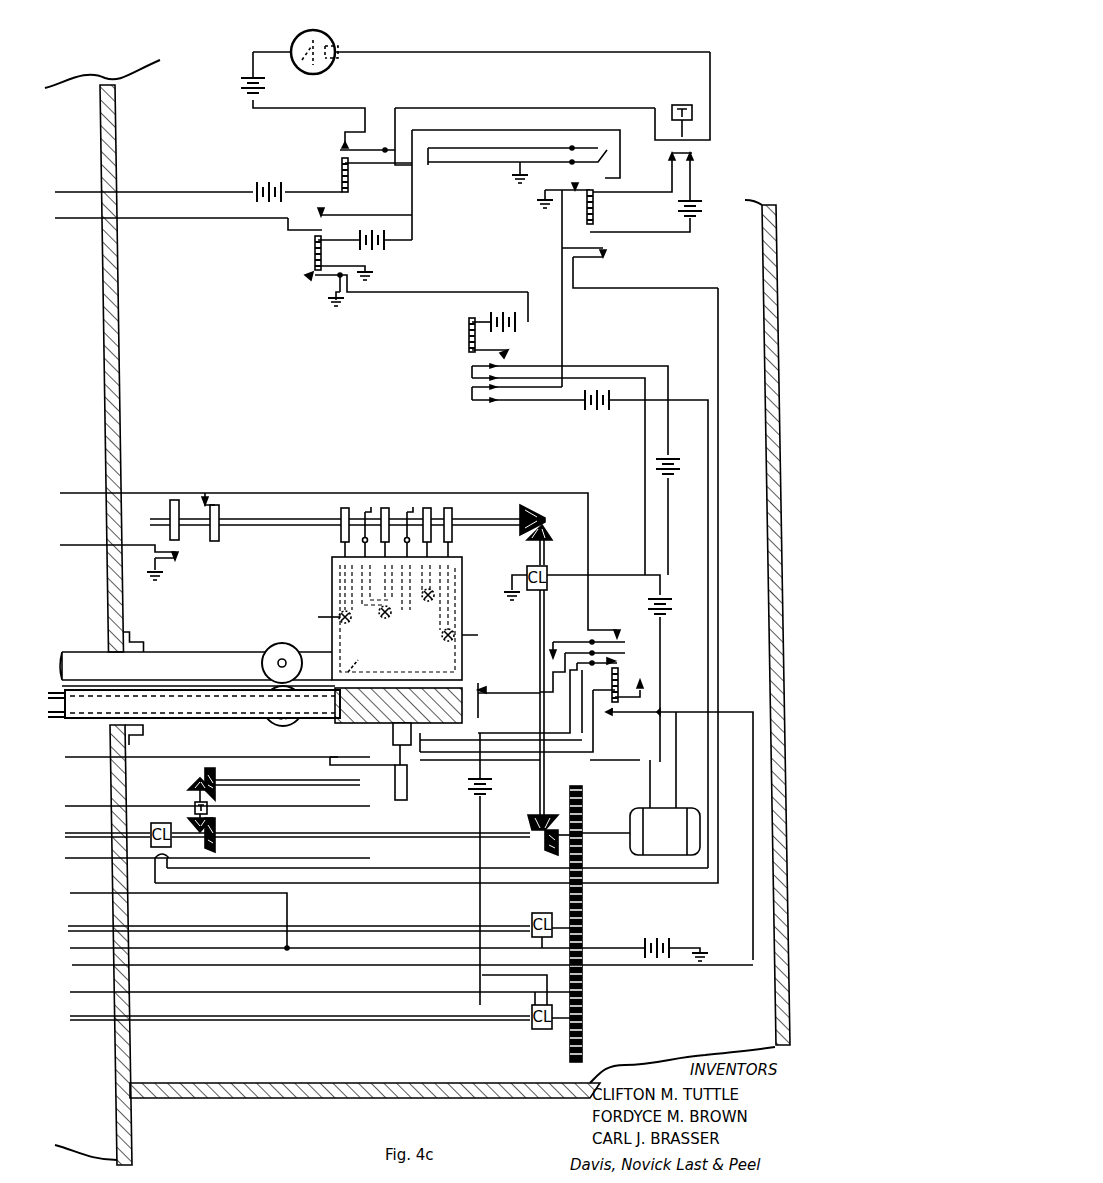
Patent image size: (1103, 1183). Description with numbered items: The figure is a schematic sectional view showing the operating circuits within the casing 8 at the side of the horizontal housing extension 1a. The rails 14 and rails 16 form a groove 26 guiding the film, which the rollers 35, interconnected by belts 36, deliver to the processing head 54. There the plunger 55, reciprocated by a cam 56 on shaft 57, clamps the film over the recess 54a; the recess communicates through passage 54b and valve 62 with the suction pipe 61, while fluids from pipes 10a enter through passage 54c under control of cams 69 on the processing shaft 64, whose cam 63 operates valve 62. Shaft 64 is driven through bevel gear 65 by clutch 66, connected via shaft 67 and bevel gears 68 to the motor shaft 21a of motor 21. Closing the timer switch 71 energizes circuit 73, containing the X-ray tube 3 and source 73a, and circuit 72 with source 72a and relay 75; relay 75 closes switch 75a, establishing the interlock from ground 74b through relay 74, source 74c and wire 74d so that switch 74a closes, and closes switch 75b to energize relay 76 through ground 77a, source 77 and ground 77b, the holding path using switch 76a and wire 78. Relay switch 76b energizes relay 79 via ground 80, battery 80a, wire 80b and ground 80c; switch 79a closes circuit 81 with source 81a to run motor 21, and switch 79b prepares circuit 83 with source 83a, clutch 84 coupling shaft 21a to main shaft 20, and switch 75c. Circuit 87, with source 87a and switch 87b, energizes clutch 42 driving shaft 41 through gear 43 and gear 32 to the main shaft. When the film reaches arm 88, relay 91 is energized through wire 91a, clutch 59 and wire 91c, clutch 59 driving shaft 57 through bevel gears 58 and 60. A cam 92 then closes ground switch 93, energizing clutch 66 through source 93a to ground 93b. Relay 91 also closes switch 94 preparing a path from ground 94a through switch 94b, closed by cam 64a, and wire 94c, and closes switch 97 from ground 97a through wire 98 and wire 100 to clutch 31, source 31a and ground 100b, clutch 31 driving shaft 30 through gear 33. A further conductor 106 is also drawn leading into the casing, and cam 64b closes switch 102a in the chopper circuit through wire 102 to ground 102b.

The horizontal extension of the housing 1a is at (108, 345).
The casing 8 is at (776, 387).
The X-ray tube 3 is at (330, 37).
The circuit 73 is at (600, 52).
The current source 73a is at (242, 92).
The double-pole timer switch 71 is at (681, 104).
The circuit 72 is at (660, 235).
The current source 72a is at (702, 219).
The relay 74 is at (339, 168).
The interlock switch 74a is at (340, 145).
The ground 74b is at (516, 179).
The current source 74c is at (257, 177).
The wire 74d is at (73, 192).
The relay 75 is at (594, 210).
The relay switch 75a is at (608, 158).
The relay switch 75b is at (570, 208).
The relay switch 75c is at (608, 254).
The relay 76 is at (314, 262).
The switch 76a is at (318, 210).
The relay switch 76b is at (310, 278).
The current source 77 is at (400, 240).
The ground 77a is at (373, 276).
The ground 77b is at (540, 206).
The wire 78 is at (73, 224).
The relay 79 is at (468, 337).
The relay switch 79a is at (466, 370).
The relay switch 79b is at (463, 396).
The ground 80 is at (513, 350).
The battery 80a is at (514, 322).
The wire 80b is at (469, 309).
The ground 80c is at (343, 303).
The circuit 81 is at (658, 446).
The current source 81a is at (668, 485).
The circuit 83 is at (718, 540).
The current source 83a is at (598, 412).
The wire 94c is at (78, 493).
The switch 94b is at (205, 492).
The ground 94a is at (555, 641).
The relay switch 94 is at (617, 635).
The processing shaft 64 is at (162, 520).
The cam 64a is at (223, 505).
The cam 64b is at (176, 500).
The wire 102 is at (86, 545).
The switch 102a is at (180, 555).
The ground 102b is at (165, 575).
The cam 63 is at (345, 505).
The cam 69 is at (385, 505).
The pipes 10a is at (365, 510).
The processing head 54 is at (332, 561).
The recess 54a is at (410, 667).
The passage 54b is at (366, 657).
The passage 54c is at (404, 624).
The suction pipe 61 is at (318, 617).
The valve 62 is at (330, 595).
The bevel gear 65 is at (543, 518).
The electromagnetic clutch 66 is at (544, 569).
The shaft 67 is at (534, 635).
The current source 93a is at (664, 597).
The ground 93b is at (507, 588).
The relay switch 87b is at (618, 656).
The relay 91 is at (618, 684).
The ground 97a is at (644, 691).
The relay switch 97 is at (612, 714).
The switch arm 88 is at (478, 684).
The rails 14 is at (163, 652).
The groove 26 is at (193, 682).
The rollers 35 is at (283, 643).
The rails 16 is at (160, 717).
The belts 36 is at (48, 694).
The plunger 55 is at (347, 728).
The cam 92 is at (388, 766).
The cam 56 is at (408, 795).
The ground switch 93 is at (335, 772).
The current source 87a is at (473, 780).
The circuit 87 is at (430, 739).
The wire 91a is at (66, 757).
The wire 91c is at (267, 807).
The shaft 57 is at (237, 782).
The bevel gears 58 is at (202, 776).
The electromagnetic clutch 59 is at (207, 806).
The bevel gears 60 is at (198, 848).
The main shaft 20 is at (76, 834).
The electromagnetic clutch 84 is at (160, 821).
The electric motor 21 is at (666, 812).
The motor shaft 21a is at (420, 833).
The bevel gears 68 is at (548, 847).
The gear 33 is at (582, 794).
The wire 98 is at (743, 808).
The conductor 106 is at (73, 896).
The shaft 30 is at (70, 930).
The wire 100 is at (70, 950).
The ground 100b is at (708, 950).
The electromagnetic clutch 31 is at (538, 913).
The current source 31a is at (660, 940).
The gear 32 is at (584, 900).
The shaft 41 is at (70, 1020).
The electromagnetic clutch 42 is at (540, 1030).
The gear 43 is at (585, 1030).